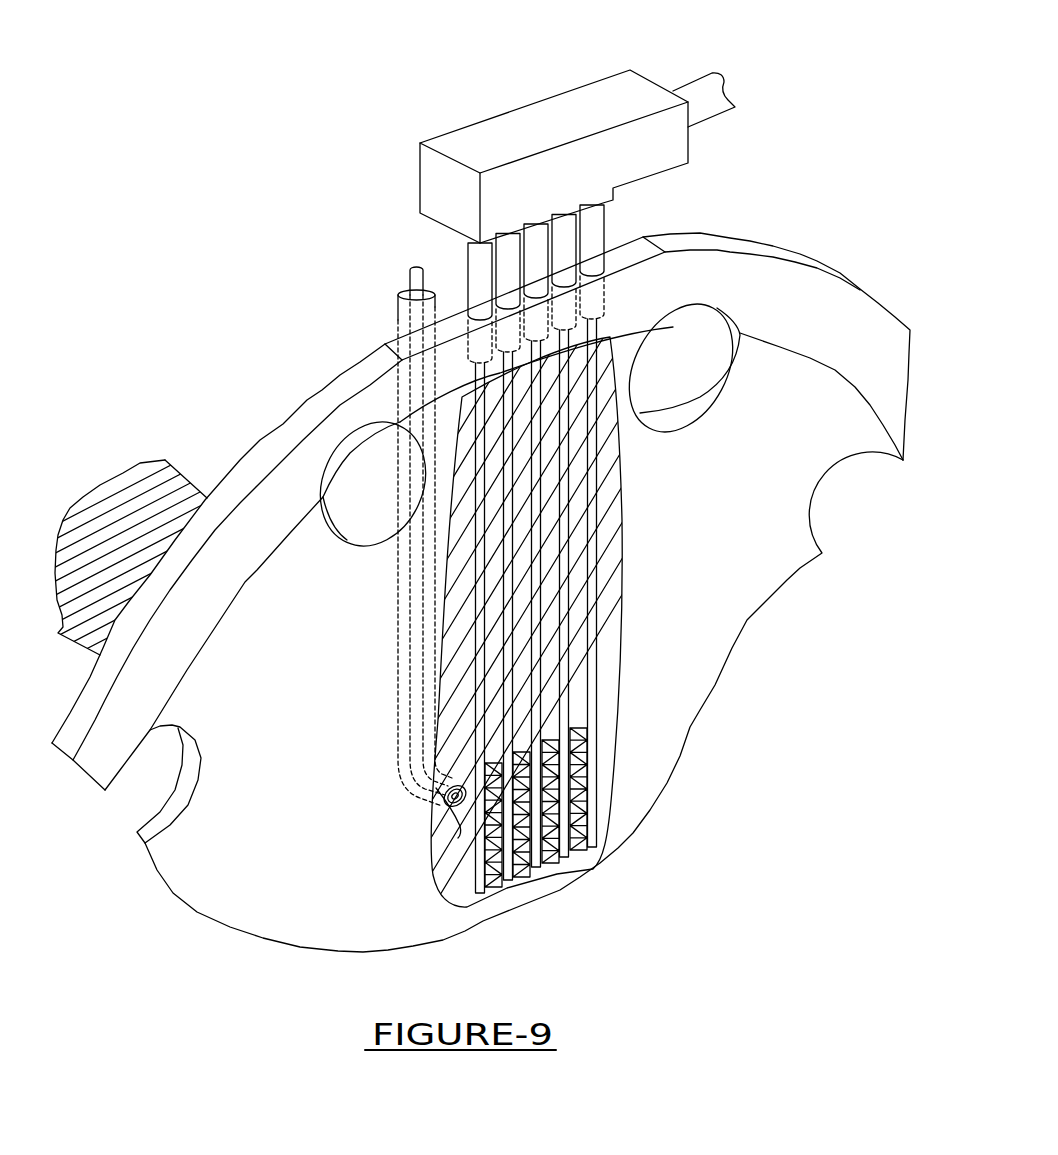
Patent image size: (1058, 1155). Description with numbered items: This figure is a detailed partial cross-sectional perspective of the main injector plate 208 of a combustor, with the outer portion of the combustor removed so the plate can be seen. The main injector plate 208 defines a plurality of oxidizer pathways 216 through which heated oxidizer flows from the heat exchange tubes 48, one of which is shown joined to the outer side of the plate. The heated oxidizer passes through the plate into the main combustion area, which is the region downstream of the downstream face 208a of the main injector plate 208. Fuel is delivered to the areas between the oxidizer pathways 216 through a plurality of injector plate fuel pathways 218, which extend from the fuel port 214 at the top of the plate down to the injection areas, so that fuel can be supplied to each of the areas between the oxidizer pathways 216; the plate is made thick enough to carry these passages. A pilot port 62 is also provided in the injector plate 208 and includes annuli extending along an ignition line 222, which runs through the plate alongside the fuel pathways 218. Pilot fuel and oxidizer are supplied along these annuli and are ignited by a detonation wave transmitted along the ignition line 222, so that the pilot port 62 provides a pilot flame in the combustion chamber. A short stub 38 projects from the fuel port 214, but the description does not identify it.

The cable 38 is at (707, 83).
The heat exchange tubes 48 is at (82, 520).
The pilot port 62 is at (457, 838).
The main injector plate 208 is at (250, 383).
The downstream face 208a is at (690, 727).
The fuel port 214 is at (515, 127).
The oxidizer pathways 216 is at (580, 848).
The injector plate fuel pathways 218 is at (478, 565).
The ignition line 222 is at (397, 312).